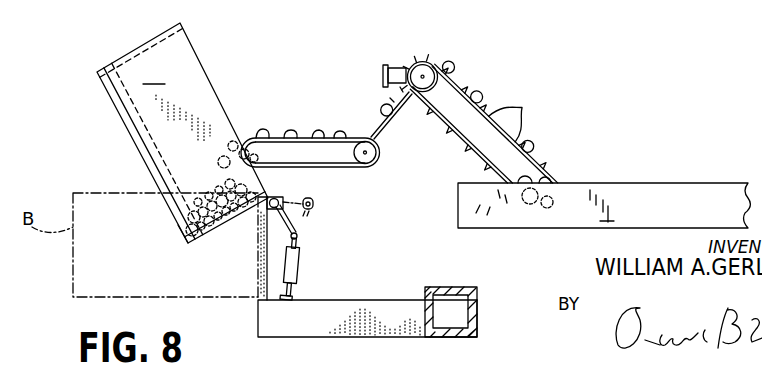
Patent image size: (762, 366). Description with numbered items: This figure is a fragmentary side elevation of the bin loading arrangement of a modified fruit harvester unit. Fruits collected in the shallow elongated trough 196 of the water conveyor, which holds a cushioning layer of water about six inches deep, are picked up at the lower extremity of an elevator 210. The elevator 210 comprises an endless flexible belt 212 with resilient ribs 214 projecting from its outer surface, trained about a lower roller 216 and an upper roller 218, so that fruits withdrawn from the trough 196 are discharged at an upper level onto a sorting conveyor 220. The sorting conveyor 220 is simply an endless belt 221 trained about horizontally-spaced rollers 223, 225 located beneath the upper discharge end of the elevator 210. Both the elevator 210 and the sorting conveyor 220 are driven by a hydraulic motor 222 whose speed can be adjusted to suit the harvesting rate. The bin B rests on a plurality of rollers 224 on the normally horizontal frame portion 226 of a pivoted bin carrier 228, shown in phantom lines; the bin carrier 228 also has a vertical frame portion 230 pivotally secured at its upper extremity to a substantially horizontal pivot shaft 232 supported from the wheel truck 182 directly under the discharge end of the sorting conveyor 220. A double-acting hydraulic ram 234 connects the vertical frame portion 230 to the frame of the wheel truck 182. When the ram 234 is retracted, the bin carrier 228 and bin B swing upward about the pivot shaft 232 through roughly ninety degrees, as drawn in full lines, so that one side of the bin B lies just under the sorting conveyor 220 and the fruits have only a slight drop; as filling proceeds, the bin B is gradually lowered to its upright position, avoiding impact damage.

The bin B is at (157, 133).
The wheel truck 182 is at (342, 301).
The trough 196 is at (670, 217).
The elevator 210 is at (460, 106).
The endless flexible belt 212 is at (449, 77).
The resilient ribs 214 is at (520, 98).
The lower roller 216 is at (555, 182).
The upper roller 218 is at (410, 58).
The sorting conveyor 220 is at (331, 125).
The endless belt 221 is at (352, 171).
The hydraulic motor 222 is at (383, 73).
The roller 223 is at (240, 127).
The rollers 224 is at (132, 130).
The roller 225 is at (372, 157).
The horizontal frame portion 226 is at (110, 83).
The bin carrier 228 is at (183, 232).
The vertical frame portion 230 is at (240, 214).
The pivot shaft 232 is at (282, 197).
The double-acting hydraulic ram 234 is at (297, 268).